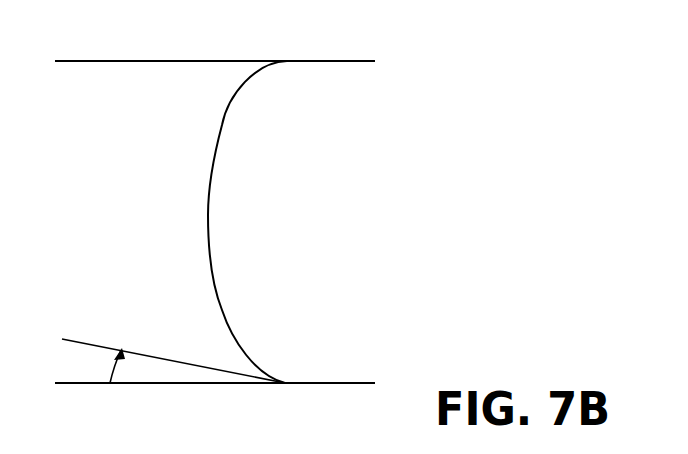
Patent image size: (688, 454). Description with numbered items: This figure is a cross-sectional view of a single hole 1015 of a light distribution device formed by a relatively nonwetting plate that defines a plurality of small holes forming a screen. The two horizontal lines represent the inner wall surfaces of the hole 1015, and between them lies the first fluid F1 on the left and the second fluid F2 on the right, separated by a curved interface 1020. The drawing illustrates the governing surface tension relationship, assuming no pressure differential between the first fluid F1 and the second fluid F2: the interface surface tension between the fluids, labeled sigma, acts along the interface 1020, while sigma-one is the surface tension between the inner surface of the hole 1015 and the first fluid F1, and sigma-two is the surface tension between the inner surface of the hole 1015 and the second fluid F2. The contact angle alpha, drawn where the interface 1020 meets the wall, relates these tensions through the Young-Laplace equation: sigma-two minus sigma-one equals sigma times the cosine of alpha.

The hole 1015 is at (203, 61).
The interface 1020 is at (213, 277).
The first fluid F1 is at (128, 174).
The second fluid F2 is at (291, 174).